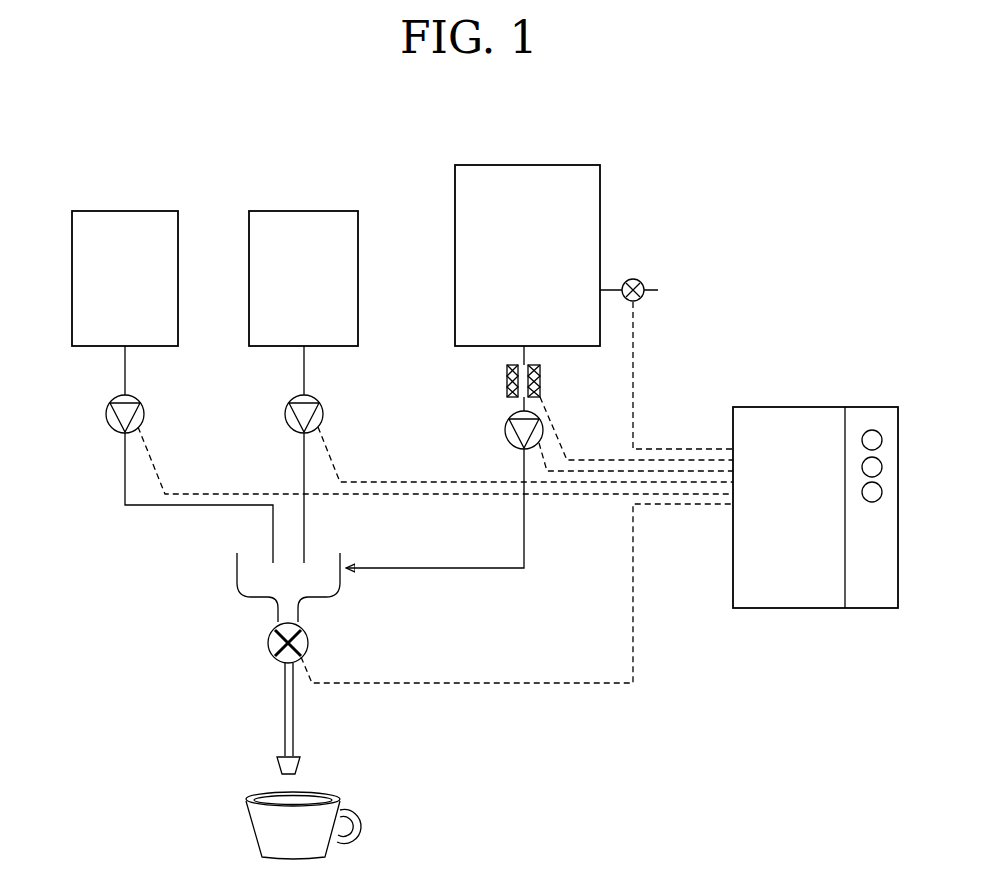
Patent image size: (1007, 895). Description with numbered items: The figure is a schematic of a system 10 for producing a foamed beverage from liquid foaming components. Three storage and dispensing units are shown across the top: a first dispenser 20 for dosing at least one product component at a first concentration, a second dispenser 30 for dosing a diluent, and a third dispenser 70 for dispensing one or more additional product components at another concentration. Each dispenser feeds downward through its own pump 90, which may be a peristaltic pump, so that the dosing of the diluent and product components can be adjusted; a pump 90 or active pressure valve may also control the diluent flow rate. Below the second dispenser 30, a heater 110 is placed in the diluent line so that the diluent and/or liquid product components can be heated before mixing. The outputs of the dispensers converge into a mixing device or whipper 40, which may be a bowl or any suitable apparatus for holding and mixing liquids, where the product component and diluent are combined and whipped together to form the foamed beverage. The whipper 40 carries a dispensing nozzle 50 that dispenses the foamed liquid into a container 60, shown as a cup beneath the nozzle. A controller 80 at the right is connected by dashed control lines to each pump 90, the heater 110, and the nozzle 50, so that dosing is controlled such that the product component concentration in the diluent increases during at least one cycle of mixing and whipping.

The system 10 is at (698, 168).
The first dispenser 20 is at (305, 207).
The second dispenser 30 is at (531, 161).
The mixing device or whipper 40 is at (234, 583).
The dispensing nozzle 50 is at (281, 710).
The container 60 is at (250, 826).
The third dispenser 70 is at (125, 207).
The controller 80 is at (812, 403).
The pump 90 is at (105, 429).
The heater 110 is at (549, 383).